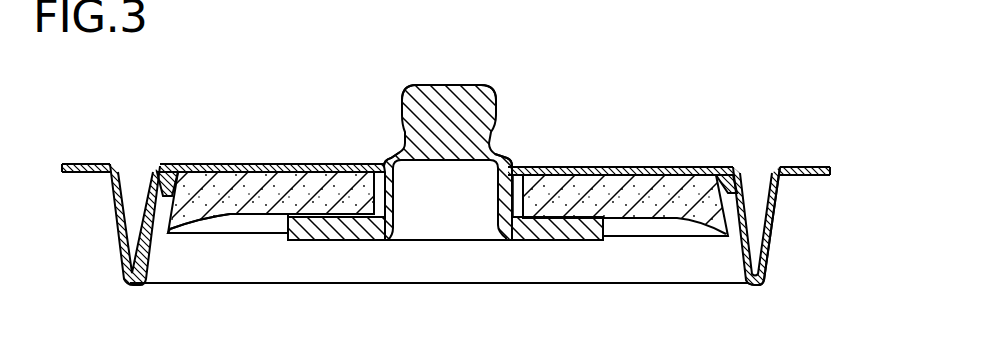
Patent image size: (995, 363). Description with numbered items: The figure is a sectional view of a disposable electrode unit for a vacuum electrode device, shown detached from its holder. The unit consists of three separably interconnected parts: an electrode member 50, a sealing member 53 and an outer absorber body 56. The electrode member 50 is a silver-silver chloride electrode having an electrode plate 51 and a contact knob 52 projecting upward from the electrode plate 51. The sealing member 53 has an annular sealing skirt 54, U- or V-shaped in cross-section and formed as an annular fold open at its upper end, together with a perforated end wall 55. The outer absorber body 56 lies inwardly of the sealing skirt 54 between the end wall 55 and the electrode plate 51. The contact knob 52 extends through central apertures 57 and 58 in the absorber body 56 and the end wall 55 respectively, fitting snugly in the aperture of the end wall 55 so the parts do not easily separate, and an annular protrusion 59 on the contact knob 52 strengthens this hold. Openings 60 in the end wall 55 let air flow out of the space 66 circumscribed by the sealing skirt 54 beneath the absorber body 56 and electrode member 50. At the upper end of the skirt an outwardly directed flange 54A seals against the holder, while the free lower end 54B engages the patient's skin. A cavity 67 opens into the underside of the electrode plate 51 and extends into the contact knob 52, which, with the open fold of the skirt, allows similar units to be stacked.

The electrode member 50 is at (445, 177).
The electrode plate 51 is at (543, 231).
The contact knob 52 is at (467, 87).
The sealing member 53 is at (786, 217).
The sealing skirt 54 is at (770, 241).
The outwardly directed flange 54A is at (805, 169).
The free lower end of the sealing skirt 54B is at (762, 284).
The end wall 55 is at (700, 168).
The outer absorber body 56 is at (267, 193).
The central aperture 57 is at (381, 222).
The central aperture 58 is at (382, 162).
The annular protrusion 59 is at (498, 156).
The openings 60 is at (328, 166).
The space 66 is at (676, 273).
The cavity 67 is at (451, 204).